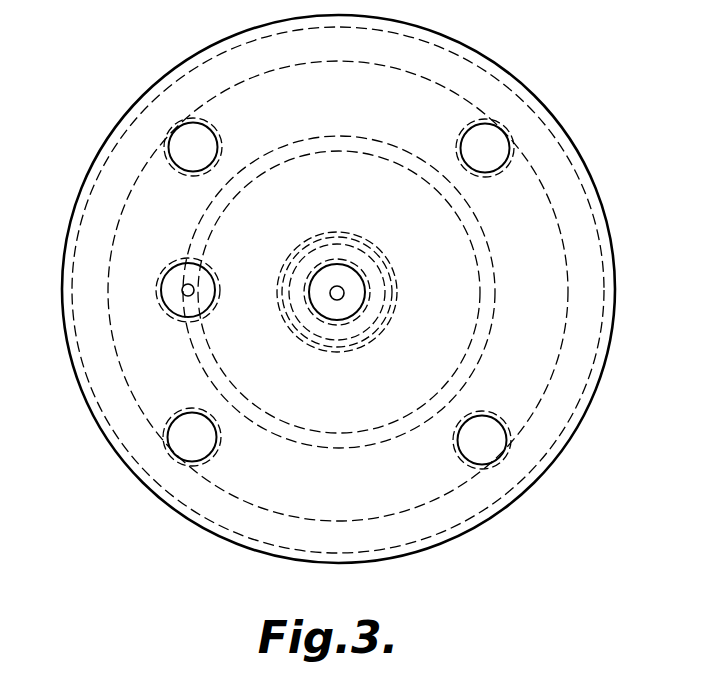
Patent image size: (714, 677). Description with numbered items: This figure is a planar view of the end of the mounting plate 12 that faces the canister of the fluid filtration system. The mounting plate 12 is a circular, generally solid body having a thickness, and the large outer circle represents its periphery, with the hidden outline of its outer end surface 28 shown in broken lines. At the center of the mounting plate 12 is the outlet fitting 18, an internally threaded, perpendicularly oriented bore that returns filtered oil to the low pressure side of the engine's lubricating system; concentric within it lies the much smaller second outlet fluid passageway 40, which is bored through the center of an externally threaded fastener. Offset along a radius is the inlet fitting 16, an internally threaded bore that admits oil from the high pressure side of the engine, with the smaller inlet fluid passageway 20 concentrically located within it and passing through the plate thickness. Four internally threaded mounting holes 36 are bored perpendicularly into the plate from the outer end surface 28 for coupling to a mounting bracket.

The mounting plate 12 is at (184, 59).
The outer end surface 28 is at (477, 88).
The outlet fitting 18 is at (357, 297).
The second outlet fluid passageway 40 is at (337, 300).
The inlet fitting 16 is at (160, 303).
The inlet fluid passageway 20 is at (183, 287).
The mounting holes 36 is at (172, 157).